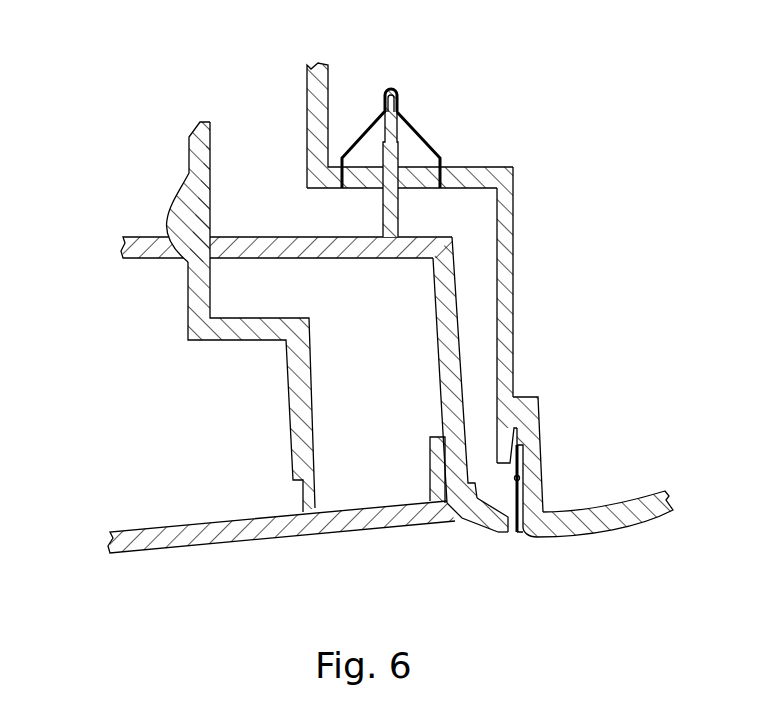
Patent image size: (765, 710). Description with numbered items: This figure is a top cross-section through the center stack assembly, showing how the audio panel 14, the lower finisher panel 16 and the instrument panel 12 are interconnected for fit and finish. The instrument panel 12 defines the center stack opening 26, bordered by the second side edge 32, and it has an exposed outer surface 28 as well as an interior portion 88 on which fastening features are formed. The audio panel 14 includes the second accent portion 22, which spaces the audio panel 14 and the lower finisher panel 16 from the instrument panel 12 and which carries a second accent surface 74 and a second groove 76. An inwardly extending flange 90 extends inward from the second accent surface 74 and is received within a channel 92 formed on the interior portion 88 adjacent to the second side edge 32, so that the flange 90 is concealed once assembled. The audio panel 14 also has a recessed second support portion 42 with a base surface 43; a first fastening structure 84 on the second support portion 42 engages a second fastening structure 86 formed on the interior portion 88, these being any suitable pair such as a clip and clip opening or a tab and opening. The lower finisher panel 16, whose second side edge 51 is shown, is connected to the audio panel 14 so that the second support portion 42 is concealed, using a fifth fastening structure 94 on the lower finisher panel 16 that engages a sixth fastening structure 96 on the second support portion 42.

The instrument panel 12 is at (664, 531).
The audio panel 14 is at (98, 247).
The lower finisher panel 16 is at (147, 551).
The second accent portion 22 is at (513, 553).
The center stack opening 26 is at (247, 101).
The outer surface 28 is at (621, 531).
The second side edge 32 is at (518, 478).
The second support portion 42 is at (148, 259).
The base surface 43 is at (357, 259).
The second side edge 51 is at (450, 516).
The second accent surface 74 is at (494, 534).
The second groove 76 is at (458, 537).
The first fastening structure 84 is at (398, 98).
The second fastening structure 86 is at (414, 160).
The interior portion 88 is at (513, 207).
The inwardly extending flange 90 is at (517, 462).
The channel 92 is at (510, 401).
The fifth fastening structure 94 is at (180, 199).
The sixth fastening structure 96 is at (233, 237).